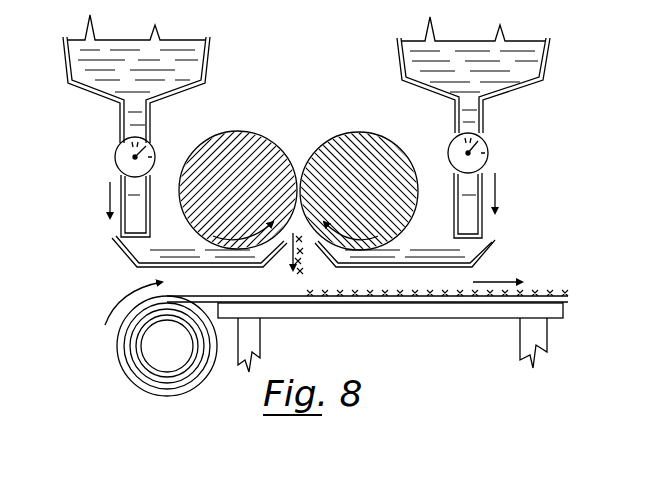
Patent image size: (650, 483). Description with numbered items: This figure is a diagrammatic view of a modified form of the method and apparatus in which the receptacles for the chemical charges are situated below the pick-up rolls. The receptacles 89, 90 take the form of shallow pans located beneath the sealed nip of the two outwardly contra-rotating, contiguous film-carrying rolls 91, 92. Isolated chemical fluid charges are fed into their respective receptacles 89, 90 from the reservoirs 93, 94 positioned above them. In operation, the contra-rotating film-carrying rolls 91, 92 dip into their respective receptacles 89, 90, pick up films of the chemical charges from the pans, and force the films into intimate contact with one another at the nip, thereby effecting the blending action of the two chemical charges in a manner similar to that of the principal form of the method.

The receptacle 89 is at (120, 255).
The receptacle 90 is at (478, 255).
The film-carrying roll 91 is at (254, 165).
The film-carrying roll 92 is at (364, 167).
The reservoir 93 is at (182, 56).
The reservoir 94 is at (513, 70).